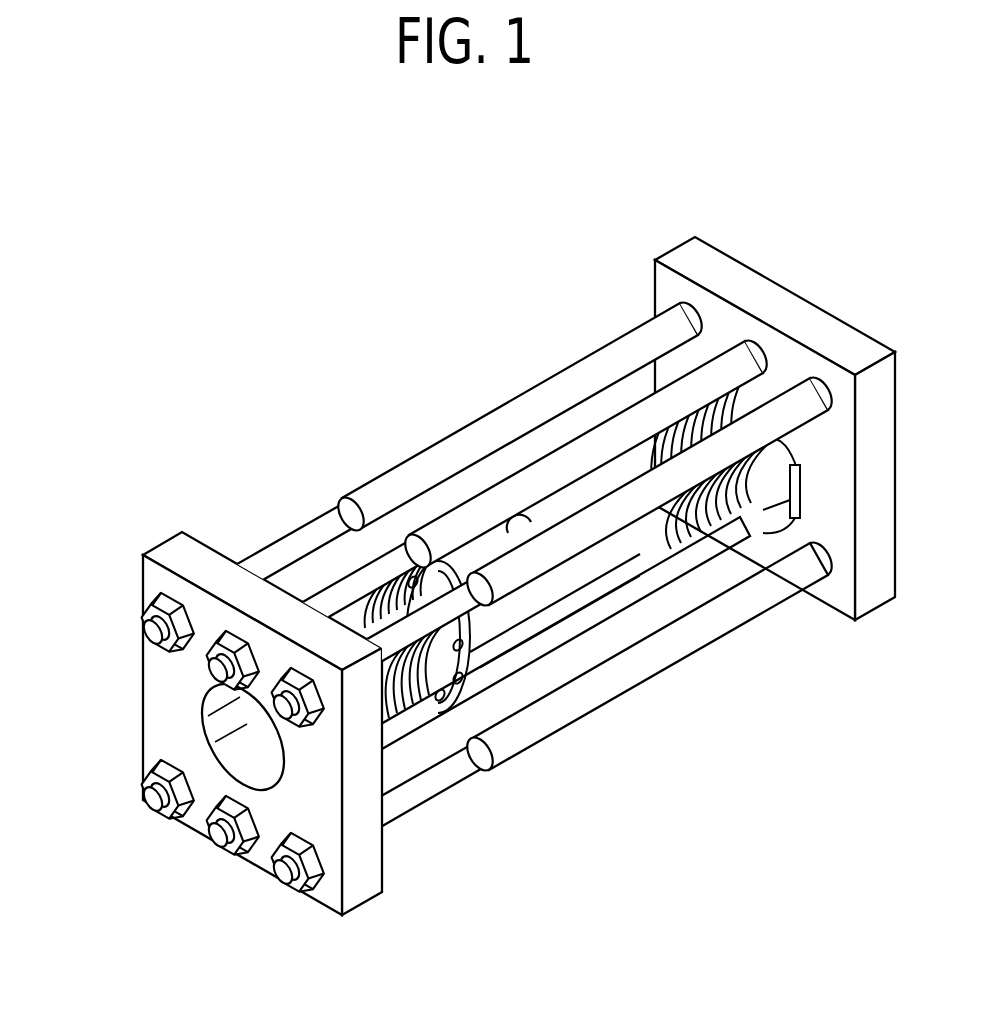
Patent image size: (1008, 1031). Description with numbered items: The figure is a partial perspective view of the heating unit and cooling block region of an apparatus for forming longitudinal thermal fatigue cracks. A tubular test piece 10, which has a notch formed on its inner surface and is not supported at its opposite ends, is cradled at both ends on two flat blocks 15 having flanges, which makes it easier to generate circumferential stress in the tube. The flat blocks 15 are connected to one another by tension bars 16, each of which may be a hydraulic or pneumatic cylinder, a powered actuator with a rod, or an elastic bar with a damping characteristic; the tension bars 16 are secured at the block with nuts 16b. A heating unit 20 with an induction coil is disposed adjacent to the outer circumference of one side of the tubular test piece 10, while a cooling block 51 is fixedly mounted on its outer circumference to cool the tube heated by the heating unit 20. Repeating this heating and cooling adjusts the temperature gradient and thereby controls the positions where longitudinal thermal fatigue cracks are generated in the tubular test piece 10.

The flat block 15 is at (683, 260).
The tension bar 16 is at (430, 458).
The nut 16b is at (150, 603).
The heating unit 20 is at (703, 545).
The cooling block 51 is at (520, 610).
The tubular test piece 10 is at (440, 657).